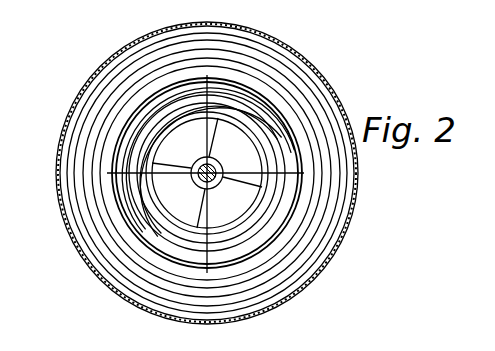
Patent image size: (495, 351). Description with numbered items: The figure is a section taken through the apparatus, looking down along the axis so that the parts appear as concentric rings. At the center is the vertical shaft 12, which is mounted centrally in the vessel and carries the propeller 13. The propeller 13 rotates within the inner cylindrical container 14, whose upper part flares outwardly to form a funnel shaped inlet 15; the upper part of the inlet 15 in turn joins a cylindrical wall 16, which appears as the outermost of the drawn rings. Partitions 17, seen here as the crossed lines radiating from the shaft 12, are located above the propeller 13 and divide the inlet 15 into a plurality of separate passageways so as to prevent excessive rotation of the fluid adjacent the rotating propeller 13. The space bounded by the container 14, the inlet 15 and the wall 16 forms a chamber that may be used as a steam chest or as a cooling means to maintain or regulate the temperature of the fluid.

The vertical shaft 12 is at (226, 174).
The propeller 13 is at (255, 212).
The inner cylindrical container 14 is at (112, 127).
The funnel shaped inlet 15 is at (117, 162).
The cylindrical wall 16 is at (130, 70).
The partitions 17 is at (279, 172).